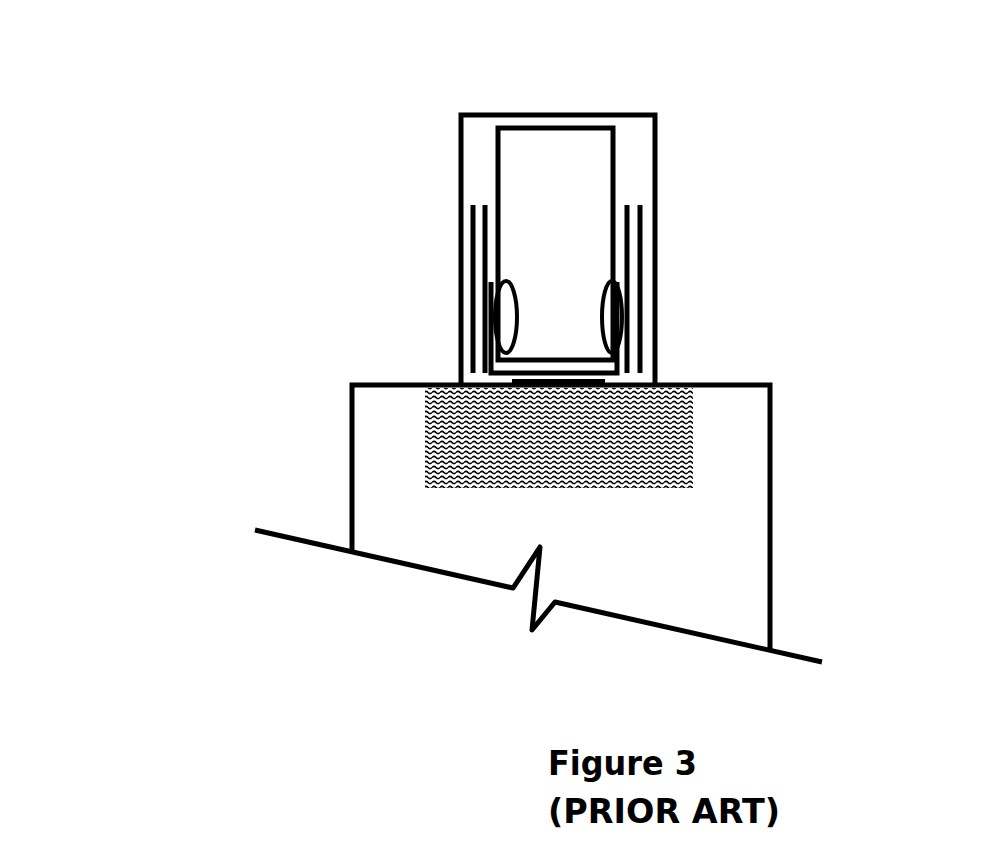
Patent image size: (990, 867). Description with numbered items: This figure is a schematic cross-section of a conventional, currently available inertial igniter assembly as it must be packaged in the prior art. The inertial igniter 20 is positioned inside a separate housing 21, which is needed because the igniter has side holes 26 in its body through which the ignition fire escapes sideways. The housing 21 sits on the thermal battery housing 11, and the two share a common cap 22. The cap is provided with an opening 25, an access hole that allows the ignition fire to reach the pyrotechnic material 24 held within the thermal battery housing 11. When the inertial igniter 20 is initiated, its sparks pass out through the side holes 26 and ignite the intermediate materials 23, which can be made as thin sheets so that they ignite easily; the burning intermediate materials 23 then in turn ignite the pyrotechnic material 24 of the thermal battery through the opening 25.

The thermal battery housing 11 is at (783, 532).
The inertial igniter 20 is at (630, 150).
The housing 21 is at (668, 216).
The common cap 22 is at (707, 370).
The intermediate materials 23 is at (468, 278).
The pyrotechnic material 24 is at (413, 437).
The opening 25 is at (555, 386).
The side holes 26 is at (517, 322).